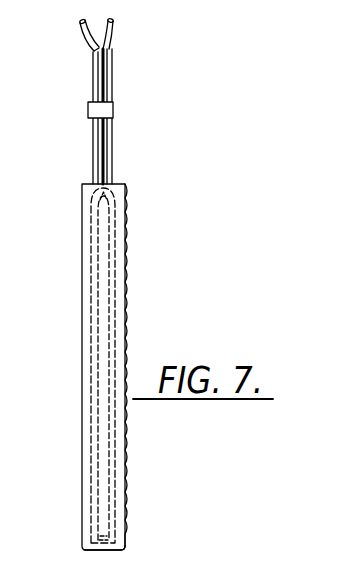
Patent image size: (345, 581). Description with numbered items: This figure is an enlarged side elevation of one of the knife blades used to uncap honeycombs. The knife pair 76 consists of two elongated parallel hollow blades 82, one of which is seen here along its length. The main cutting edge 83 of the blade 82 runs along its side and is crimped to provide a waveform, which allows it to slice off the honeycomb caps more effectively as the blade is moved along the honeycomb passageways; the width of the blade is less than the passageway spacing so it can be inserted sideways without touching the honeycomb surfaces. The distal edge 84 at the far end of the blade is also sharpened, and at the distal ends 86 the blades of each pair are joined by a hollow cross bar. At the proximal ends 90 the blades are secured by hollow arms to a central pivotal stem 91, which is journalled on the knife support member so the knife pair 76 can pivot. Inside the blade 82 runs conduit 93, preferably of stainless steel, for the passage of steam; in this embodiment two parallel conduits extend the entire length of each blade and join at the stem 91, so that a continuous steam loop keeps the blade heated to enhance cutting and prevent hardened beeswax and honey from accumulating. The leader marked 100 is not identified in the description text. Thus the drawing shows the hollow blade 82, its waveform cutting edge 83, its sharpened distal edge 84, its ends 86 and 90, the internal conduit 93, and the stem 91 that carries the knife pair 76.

The lead wire ends 100 is at (113, 33).
The central pivotal stem 91 is at (90, 62).
The proximal ends 90 is at (90, 184).
The knife pair 76 is at (79, 243).
The main cutting edge 83 is at (126, 328).
The hollow blade 82 is at (123, 435).
The conduit 93 is at (115, 318).
The distal edge 84 is at (93, 552).
The distal ends 86 is at (120, 548).